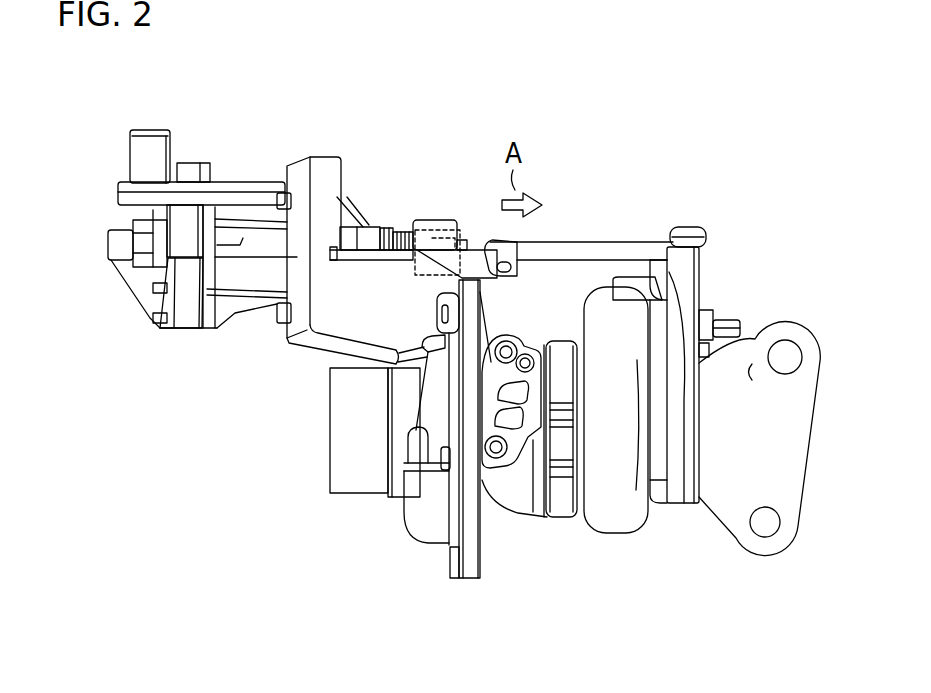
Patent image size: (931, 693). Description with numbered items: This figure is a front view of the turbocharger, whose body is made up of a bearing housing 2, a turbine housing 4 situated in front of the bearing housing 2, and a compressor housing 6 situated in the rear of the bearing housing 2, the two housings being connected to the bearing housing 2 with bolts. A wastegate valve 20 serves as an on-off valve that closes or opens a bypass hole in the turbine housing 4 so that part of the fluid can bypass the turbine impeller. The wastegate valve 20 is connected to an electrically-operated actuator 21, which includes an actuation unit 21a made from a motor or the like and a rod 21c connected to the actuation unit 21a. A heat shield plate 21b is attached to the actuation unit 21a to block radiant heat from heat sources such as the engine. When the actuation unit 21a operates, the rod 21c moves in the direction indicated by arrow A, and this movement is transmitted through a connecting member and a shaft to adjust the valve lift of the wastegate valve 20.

The electrically-operated actuator 21 is at (246, 124).
The actuation unit 21a is at (396, 225).
The heat shield plate 21b is at (437, 218).
The rod 21c is at (592, 241).
The wastegate valve 20 is at (703, 302).
The bearing housing 2 is at (517, 518).
The turbine housing 4 is at (617, 534).
The compressor housing 6 is at (410, 543).